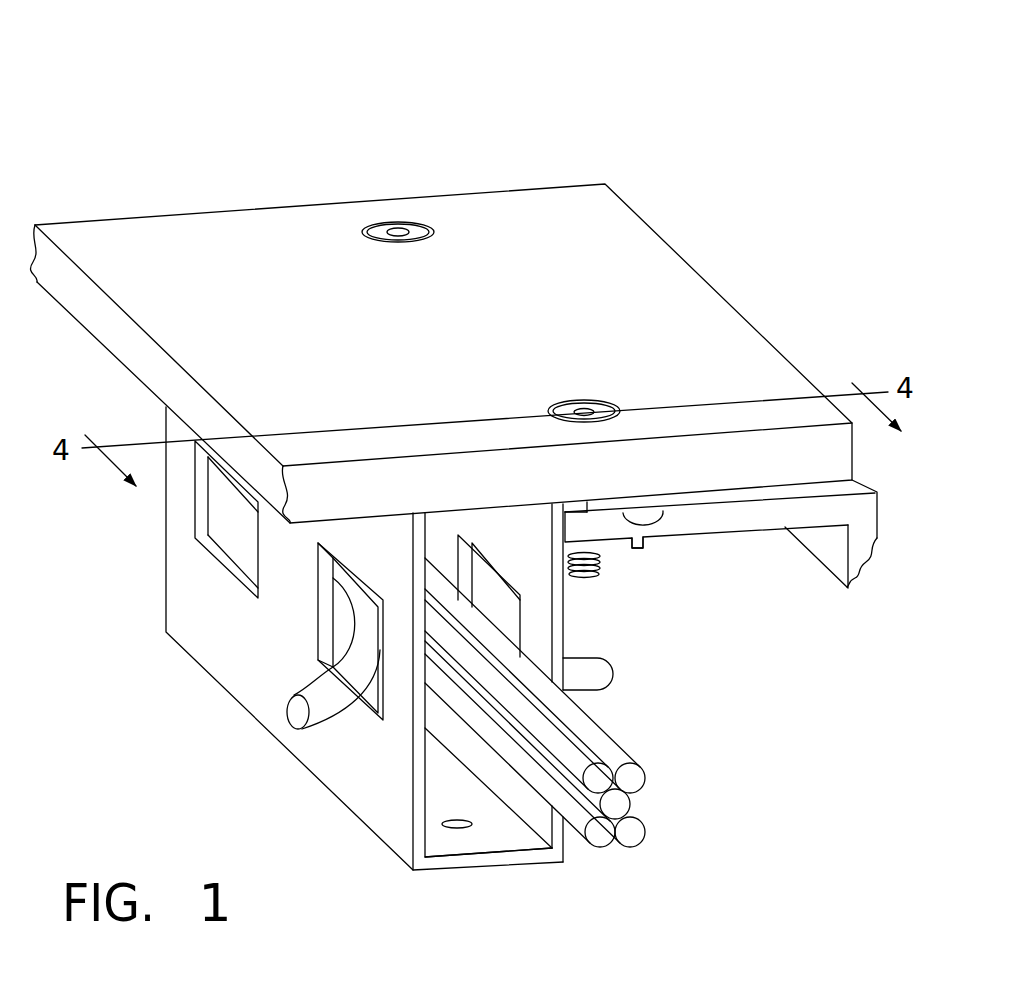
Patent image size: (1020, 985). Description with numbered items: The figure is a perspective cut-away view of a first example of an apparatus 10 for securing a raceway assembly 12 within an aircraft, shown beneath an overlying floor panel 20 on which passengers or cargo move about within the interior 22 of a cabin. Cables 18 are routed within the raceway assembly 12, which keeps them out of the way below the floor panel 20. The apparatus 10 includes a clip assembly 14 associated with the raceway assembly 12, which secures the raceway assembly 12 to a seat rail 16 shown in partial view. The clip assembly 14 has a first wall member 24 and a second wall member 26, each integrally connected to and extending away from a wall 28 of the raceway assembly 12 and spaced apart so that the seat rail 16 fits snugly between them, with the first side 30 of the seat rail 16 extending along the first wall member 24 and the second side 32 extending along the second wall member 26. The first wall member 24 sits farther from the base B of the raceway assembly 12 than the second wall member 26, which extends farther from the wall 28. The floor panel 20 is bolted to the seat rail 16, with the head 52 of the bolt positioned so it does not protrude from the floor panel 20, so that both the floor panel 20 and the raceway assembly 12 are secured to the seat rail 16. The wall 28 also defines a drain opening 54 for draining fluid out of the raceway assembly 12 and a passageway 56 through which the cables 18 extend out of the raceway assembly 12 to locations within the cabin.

The apparatus 10 is at (736, 671).
The raceway assembly 12 is at (201, 676).
The clip assembly 14 is at (613, 571).
The seat rail 16 is at (712, 518).
The cables 18 is at (599, 858).
The floor panel 20 is at (628, 248).
The interior 22 is at (423, 40).
The first wall member 24 is at (568, 503).
The second wall member 26 is at (632, 542).
The wall 28 is at (555, 622).
The first side 30 is at (660, 502).
The second side 32 is at (797, 530).
The head 52 is at (420, 225).
The drain opening 54 is at (458, 830).
The passageway 56 is at (211, 532).
The base B is at (495, 872).